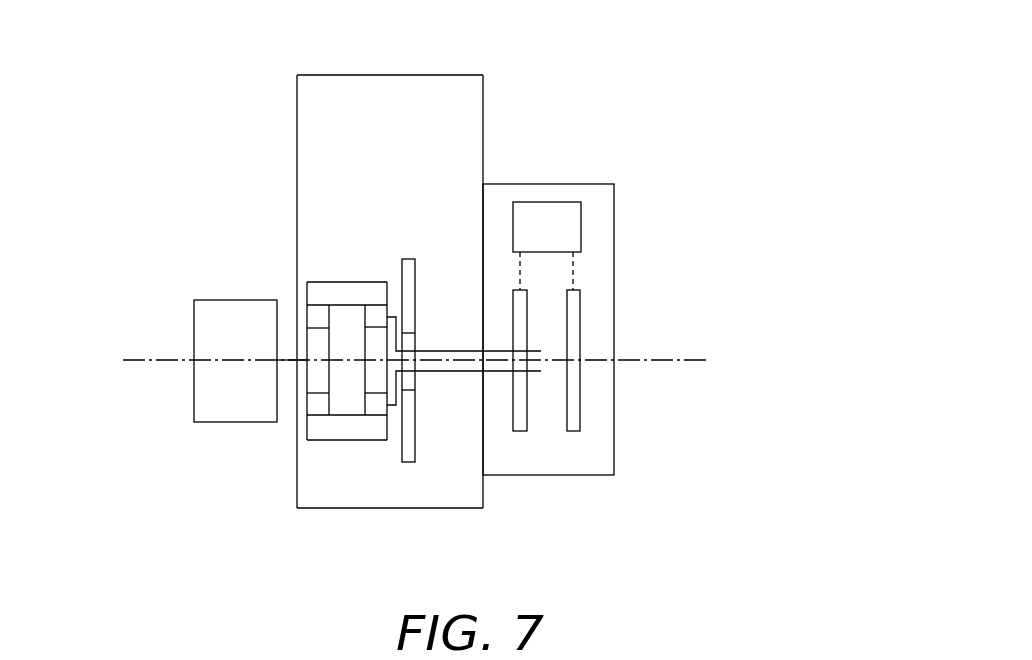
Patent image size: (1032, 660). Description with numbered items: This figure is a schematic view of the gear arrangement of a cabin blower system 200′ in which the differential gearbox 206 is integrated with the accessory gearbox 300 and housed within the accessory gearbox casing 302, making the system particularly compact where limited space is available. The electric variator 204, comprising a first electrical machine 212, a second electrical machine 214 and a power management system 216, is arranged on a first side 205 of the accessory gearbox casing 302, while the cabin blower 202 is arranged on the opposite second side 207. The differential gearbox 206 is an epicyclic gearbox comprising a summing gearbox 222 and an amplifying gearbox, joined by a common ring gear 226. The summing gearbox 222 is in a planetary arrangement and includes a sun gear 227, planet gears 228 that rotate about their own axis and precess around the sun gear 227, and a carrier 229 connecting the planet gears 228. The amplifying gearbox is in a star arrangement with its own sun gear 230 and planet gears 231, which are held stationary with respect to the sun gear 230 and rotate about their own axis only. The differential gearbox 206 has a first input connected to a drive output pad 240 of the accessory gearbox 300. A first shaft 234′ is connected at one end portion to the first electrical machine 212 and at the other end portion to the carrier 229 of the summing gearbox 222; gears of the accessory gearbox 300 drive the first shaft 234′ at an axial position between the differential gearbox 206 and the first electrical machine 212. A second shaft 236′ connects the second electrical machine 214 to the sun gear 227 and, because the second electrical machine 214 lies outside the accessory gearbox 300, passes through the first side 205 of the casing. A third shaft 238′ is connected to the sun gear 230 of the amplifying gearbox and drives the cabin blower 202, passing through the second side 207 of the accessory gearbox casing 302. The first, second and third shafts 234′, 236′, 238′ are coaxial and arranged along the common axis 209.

The cabin blower system 200′ is at (777, 95).
The cabin blower 202 is at (213, 404).
The electric variator 204 is at (587, 346).
The first side 205 is at (483, 93).
The differential gearbox 206 is at (275, 371).
The second side 207 is at (297, 102).
The common axis 209 is at (692, 360).
The first electrical machine 212 is at (520, 420).
The second electrical machine 214 is at (575, 408).
The power management system 216 is at (547, 218).
The summing gearbox 222 is at (357, 446).
The ring gear 226 is at (340, 430).
The sun gear 227 is at (368, 344).
The planet gears 228 is at (376, 317).
The carrier 229 is at (391, 407).
The sun gear 230 is at (313, 373).
The planet gears 231 is at (318, 403).
The first shaft 234′ is at (457, 350).
The second shaft 236′ is at (555, 360).
The third shaft 238′ is at (285, 358).
The drive output pad 240 is at (433, 389).
The accessory gearbox 300 is at (395, 255).
The accessory gearbox casing 302 is at (392, 74).